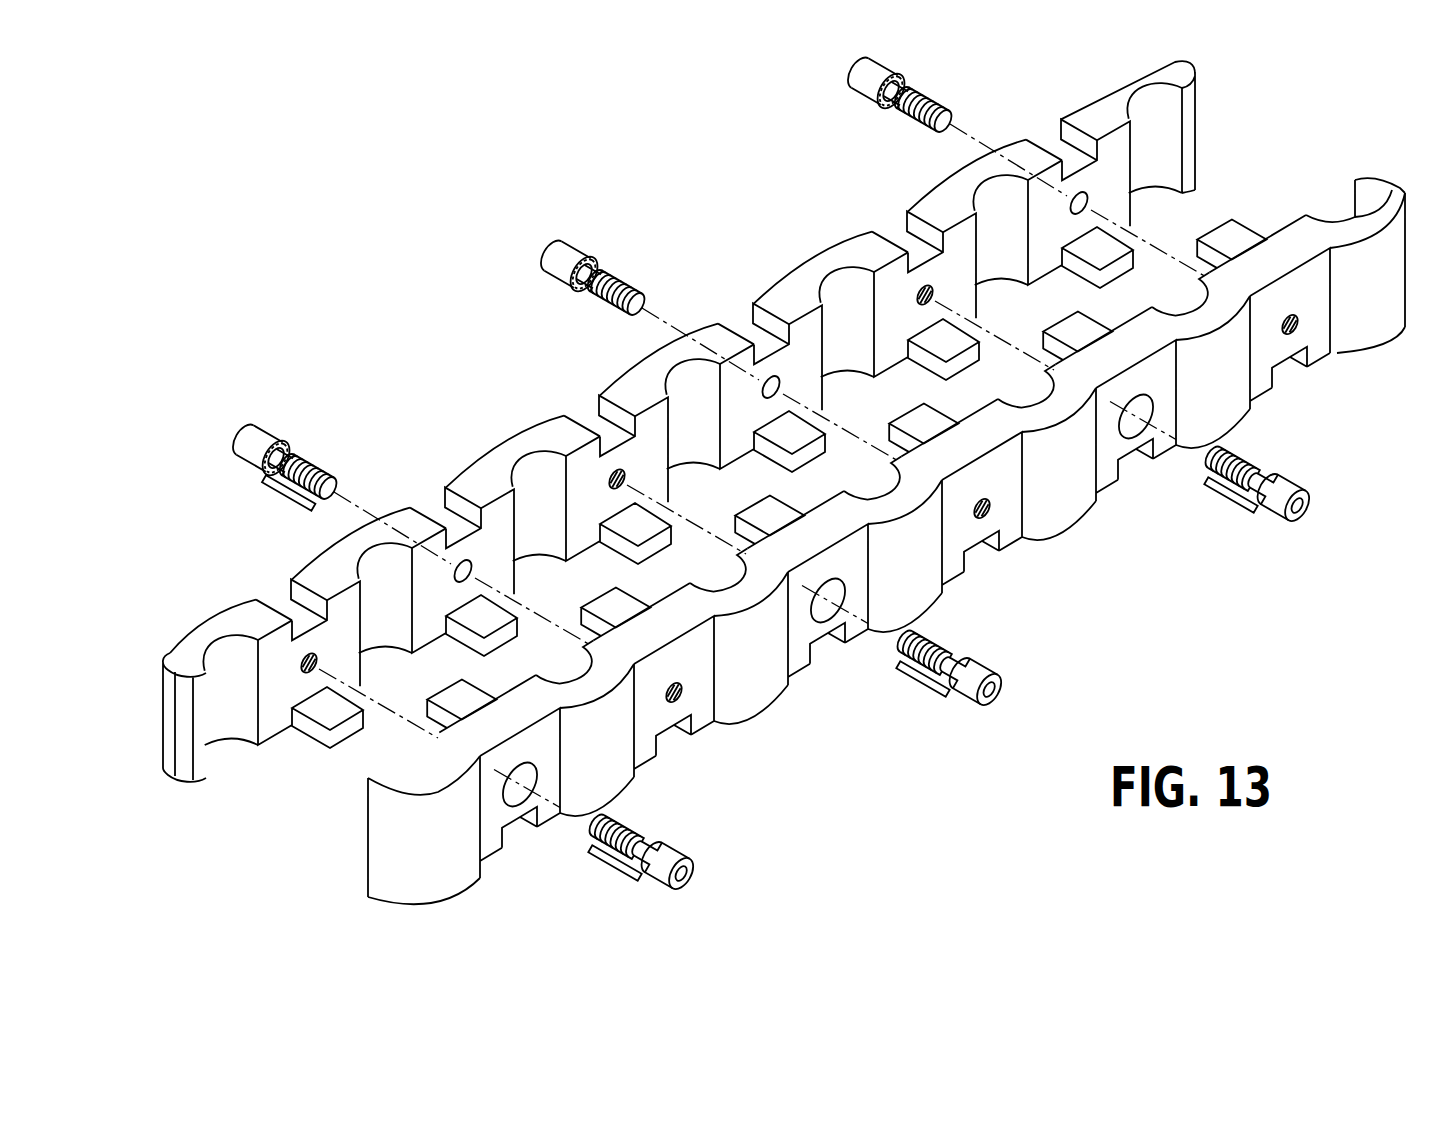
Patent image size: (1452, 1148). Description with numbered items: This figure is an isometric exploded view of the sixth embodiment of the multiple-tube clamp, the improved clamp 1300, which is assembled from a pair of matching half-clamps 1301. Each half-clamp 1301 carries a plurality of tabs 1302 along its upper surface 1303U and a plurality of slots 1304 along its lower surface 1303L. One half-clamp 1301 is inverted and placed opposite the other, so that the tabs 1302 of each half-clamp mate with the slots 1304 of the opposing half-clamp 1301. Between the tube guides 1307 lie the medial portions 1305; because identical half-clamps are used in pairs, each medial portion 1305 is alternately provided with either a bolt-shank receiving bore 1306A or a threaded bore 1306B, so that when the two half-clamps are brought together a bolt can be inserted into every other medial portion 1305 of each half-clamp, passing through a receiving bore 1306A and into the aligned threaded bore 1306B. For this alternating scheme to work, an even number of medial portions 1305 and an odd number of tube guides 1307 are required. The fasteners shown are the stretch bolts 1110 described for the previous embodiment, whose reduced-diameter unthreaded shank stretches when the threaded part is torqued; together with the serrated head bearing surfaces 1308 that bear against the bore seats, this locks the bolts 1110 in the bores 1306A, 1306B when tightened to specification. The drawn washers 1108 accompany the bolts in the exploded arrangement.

The improved clamp 1300 is at (785, 495).
The half-clamp 1301 is at (390, 870).
The tab 1302 is at (1210, 237).
The lower surface 1303L is at (484, 476).
The upper surface 1303U is at (512, 712).
The slot 1304 is at (1046, 127).
The medial portion 1305 is at (1080, 128).
The bolt-shank receiving bore 1306A is at (1056, 190).
The threaded bore 1306B is at (902, 285).
The tube guide 1307 is at (650, 360).
The serrated head bearing surface 1308 is at (257, 486).
The bolt 1108 is at (262, 432).
The bolt 1110 is at (290, 492).